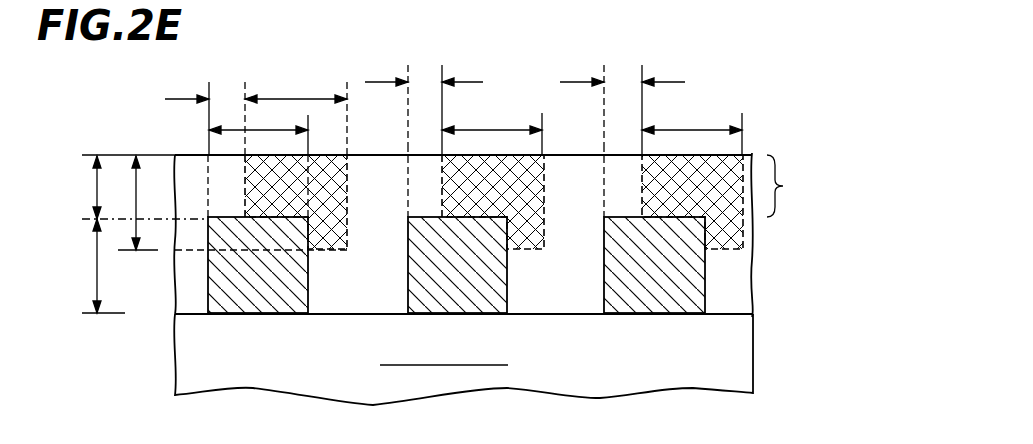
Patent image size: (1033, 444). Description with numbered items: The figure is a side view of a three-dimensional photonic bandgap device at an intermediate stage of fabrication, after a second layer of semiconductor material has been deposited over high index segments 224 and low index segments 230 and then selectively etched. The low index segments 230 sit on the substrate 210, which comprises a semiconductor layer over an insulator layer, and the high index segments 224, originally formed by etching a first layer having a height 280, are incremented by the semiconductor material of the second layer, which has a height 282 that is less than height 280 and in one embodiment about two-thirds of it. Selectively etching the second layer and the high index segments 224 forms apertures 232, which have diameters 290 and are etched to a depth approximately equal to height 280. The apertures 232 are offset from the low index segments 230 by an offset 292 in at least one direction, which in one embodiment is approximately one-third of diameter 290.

The substrate 210 is at (193, 370).
The high index segments 224 is at (184, 272).
The low index segments 230 is at (277, 290).
The apertures 232 is at (293, 194).
The height 280 is at (96, 270).
The height 282 is at (96, 188).
The diameter 290 is at (288, 99).
The offset 292 is at (172, 99).